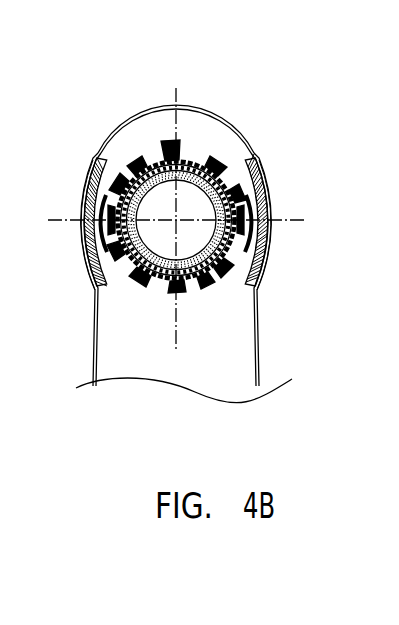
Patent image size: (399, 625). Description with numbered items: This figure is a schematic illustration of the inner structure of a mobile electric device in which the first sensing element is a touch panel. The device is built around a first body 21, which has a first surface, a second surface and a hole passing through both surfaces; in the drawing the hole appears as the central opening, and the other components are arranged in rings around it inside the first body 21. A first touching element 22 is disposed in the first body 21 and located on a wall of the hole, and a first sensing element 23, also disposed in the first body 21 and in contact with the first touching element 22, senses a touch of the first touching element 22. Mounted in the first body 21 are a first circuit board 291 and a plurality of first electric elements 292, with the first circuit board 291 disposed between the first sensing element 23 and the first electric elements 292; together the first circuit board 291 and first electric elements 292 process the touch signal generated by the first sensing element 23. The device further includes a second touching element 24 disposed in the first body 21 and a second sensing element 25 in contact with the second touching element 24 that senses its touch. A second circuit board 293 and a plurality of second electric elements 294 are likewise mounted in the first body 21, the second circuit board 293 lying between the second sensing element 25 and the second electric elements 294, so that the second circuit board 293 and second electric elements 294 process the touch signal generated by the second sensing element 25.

The first body 21 is at (203, 113).
The first touching element 22 is at (207, 163).
The first sensing element 23 is at (170, 283).
The second touching element 24 is at (86, 210).
The second sensing element 25 is at (84, 226).
The first circuit board 291 is at (196, 286).
The first electric elements 292 is at (172, 290).
The second circuit board 293 is at (92, 248).
The second electric elements 294 is at (226, 272).